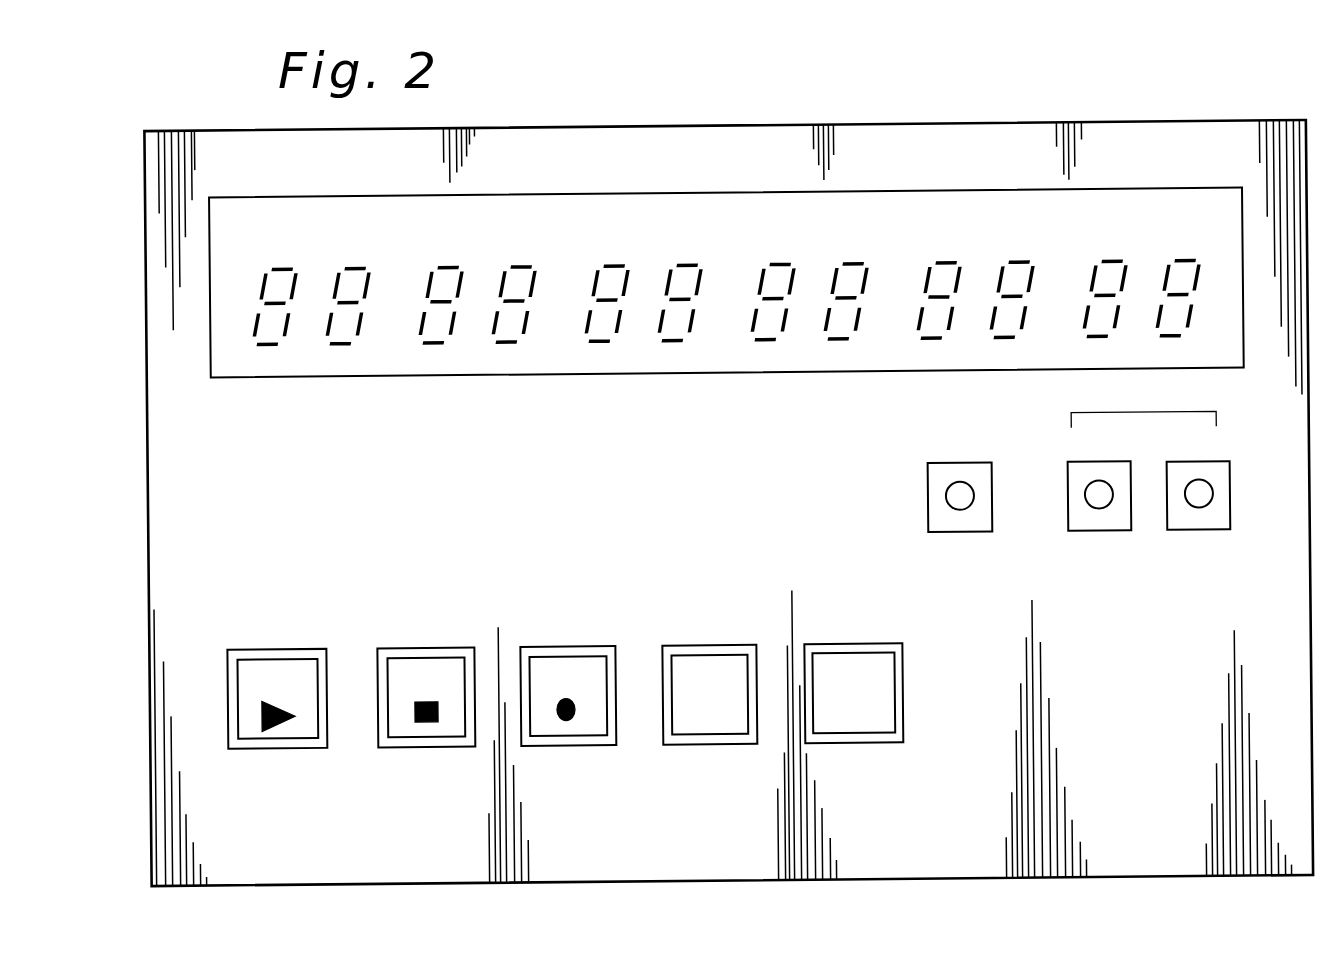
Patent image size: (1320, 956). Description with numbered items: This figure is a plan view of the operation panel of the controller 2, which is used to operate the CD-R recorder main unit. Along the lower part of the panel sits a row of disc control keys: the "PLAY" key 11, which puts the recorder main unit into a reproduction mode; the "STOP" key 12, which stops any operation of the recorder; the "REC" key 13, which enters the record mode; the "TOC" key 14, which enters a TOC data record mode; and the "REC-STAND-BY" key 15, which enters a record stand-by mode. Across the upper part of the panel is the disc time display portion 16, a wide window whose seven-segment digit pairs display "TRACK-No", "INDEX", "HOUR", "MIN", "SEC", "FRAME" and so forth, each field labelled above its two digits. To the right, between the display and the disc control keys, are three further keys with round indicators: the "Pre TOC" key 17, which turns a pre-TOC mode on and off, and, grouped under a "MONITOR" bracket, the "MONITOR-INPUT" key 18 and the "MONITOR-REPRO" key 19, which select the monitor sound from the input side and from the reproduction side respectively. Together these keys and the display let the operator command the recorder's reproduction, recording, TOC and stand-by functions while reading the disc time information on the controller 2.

The controller 2 is at (1130, 125).
The "PLAY" key 11 is at (281, 645).
The "STOP" key 12 is at (432, 647).
The "REC" key 13 is at (569, 646).
The "TOC" key 14 is at (712, 646).
The "REC-STAND-BY" key 15 is at (857, 645).
The disc time display portion 16 is at (726, 218).
The "Pre TOC" key 17 is at (967, 534).
The "MONITOR-INPUT" key 18 is at (1105, 534).
The "MONITOR-REPRO" key 19 is at (1203, 534).